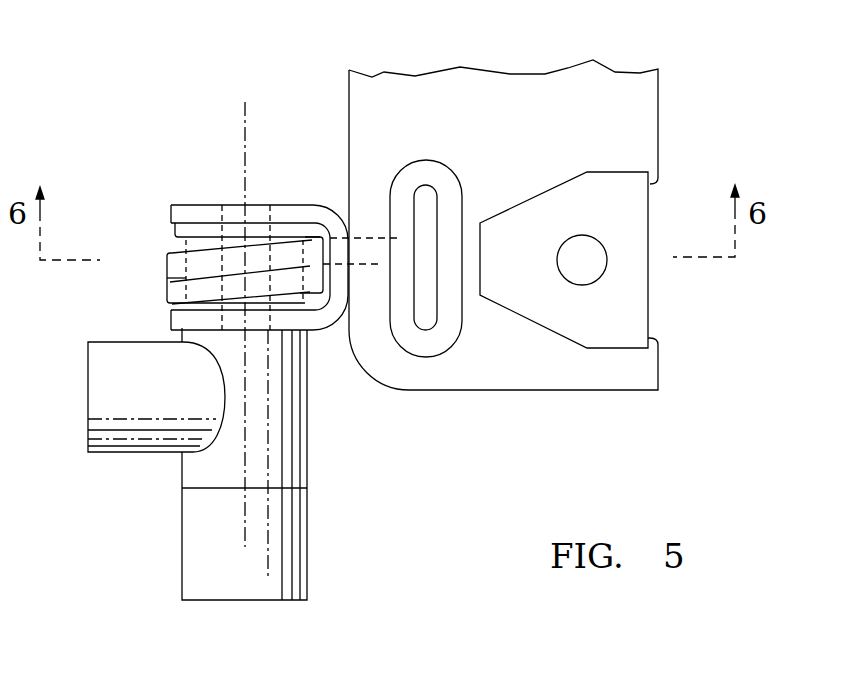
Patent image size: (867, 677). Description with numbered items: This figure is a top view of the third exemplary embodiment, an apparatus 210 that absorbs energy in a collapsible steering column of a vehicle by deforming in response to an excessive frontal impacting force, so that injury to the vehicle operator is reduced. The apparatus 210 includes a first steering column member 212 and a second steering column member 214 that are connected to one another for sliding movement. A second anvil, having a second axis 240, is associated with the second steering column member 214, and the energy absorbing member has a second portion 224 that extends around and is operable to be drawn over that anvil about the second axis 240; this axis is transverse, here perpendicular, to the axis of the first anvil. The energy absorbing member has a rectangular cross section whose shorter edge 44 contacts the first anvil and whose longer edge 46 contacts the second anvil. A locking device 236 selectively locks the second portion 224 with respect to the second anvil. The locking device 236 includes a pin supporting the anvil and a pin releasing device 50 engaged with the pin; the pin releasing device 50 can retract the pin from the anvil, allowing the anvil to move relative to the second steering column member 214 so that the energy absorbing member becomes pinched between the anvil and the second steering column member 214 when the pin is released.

The apparatus 210 is at (693, 72).
The first steering column member 212 is at (633, 185).
The second steering column member 214 is at (403, 375).
The second portion 224 is at (170, 253).
The shorter edge 44 is at (177, 278).
The longer edge 46 is at (187, 263).
The second axis 240 is at (244, 155).
The locking device 236 is at (162, 517).
The pin releasing device 50 is at (285, 463).